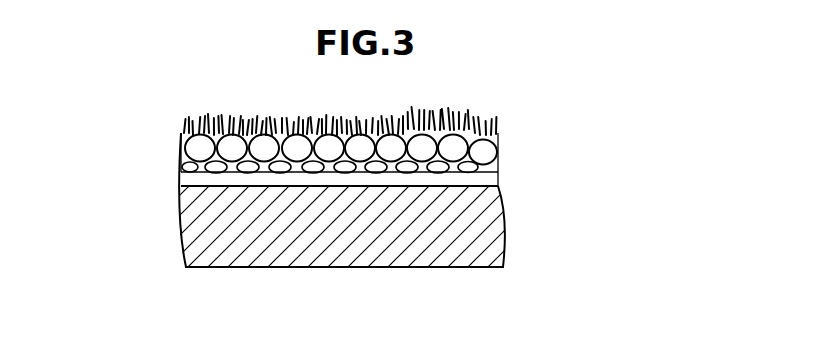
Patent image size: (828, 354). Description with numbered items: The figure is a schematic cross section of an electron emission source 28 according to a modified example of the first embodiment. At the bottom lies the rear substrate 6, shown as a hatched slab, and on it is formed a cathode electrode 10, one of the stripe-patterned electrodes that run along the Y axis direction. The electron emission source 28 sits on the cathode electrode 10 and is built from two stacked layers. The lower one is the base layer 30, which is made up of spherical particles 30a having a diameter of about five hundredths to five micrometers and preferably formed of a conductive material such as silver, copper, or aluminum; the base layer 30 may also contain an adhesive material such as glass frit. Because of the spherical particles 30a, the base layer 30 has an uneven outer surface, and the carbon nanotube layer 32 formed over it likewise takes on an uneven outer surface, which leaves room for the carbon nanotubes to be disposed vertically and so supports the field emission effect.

The rear substrate 6 is at (296, 250).
The cathode electrode 10 is at (387, 180).
The electron emission source 28 is at (362, 146).
The base layer 30 is at (338, 159).
The spherical particle 30a is at (188, 152).
The carbon nanotube layer 32 is at (500, 135).